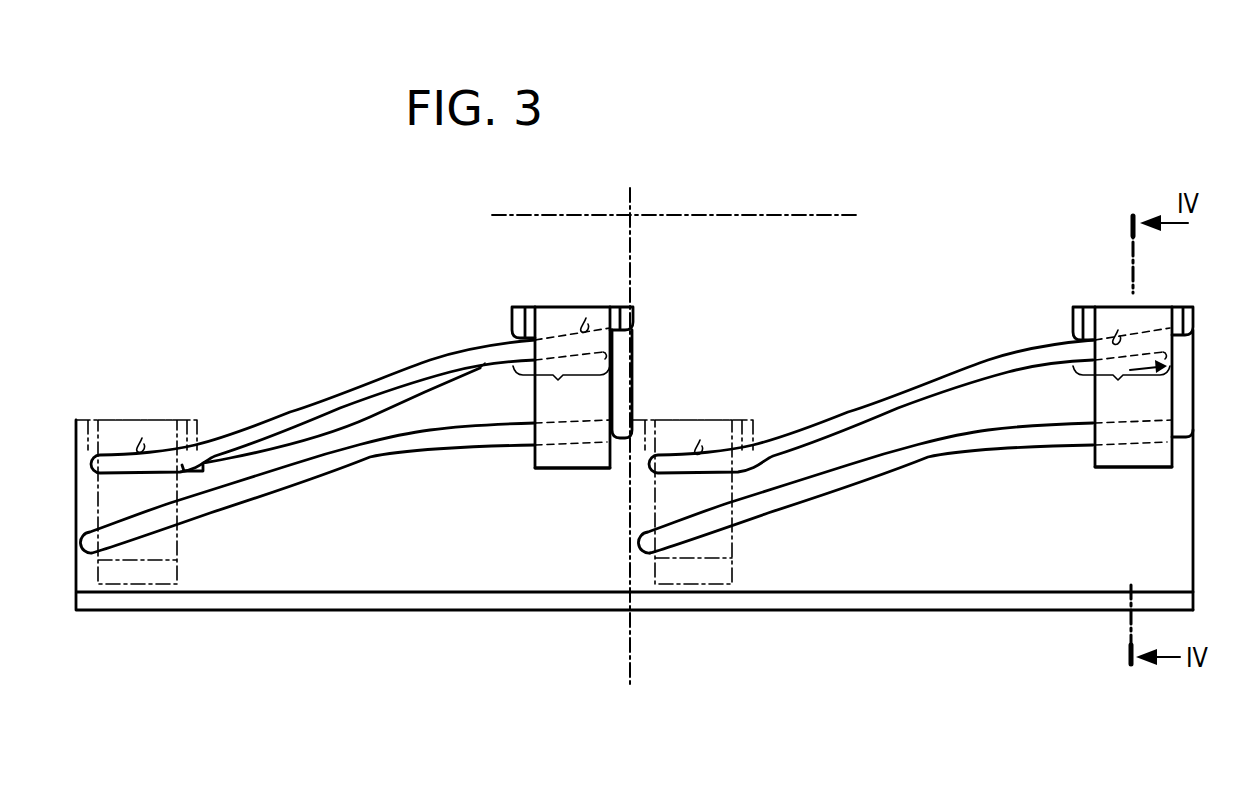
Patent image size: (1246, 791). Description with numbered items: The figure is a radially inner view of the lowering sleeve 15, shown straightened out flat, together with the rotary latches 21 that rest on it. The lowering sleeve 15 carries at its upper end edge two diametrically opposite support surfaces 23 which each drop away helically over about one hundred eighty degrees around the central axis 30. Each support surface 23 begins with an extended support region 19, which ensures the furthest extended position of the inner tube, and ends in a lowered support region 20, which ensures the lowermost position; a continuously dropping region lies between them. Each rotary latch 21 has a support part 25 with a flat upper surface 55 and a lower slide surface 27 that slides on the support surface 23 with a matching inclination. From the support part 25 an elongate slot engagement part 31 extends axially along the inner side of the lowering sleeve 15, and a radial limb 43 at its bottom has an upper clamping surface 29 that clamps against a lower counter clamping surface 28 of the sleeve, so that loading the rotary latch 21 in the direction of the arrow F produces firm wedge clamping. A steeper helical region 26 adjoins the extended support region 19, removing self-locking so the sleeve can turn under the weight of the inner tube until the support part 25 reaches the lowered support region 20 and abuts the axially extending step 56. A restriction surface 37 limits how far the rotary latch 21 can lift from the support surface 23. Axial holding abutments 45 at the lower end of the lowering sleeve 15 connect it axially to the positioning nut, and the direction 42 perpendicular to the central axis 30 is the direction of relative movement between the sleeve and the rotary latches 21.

The lowering sleeve 15 is at (497, 578).
The extended support region 19 is at (842, 387).
The lowered support region 20 is at (132, 487).
The rotary latch 21 is at (524, 398).
The support surface 23 is at (362, 372).
The support part 25 is at (520, 305).
The helical region 26 is at (390, 405).
The slide surface 27 is at (586, 318).
The counter clamping surface 28 is at (592, 441).
The clamping surface 29 is at (574, 458).
The central axis 30 is at (632, 627).
The elongate slot engagement part 31 is at (533, 456).
The restriction surface 37 is at (941, 459).
The direction of relative movement 42 is at (720, 212).
The limb 43 is at (547, 466).
The axial holding abutment 45 is at (995, 592).
The flat upper surface 55 is at (560, 304).
The axially extending step 56 is at (642, 338).
The arrow F is at (1168, 365).